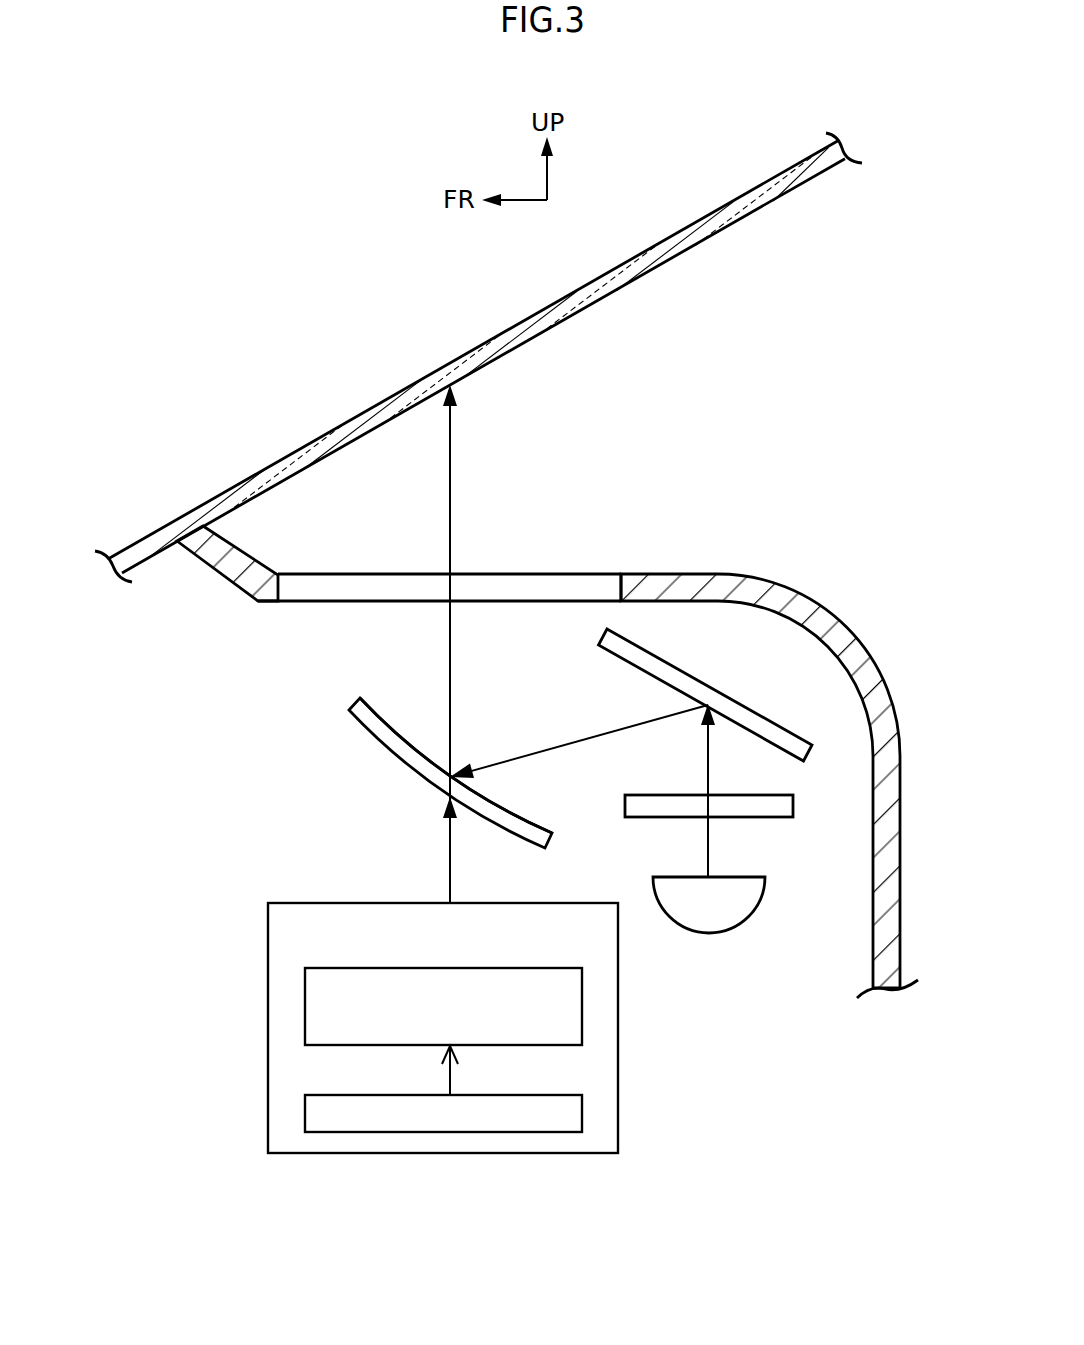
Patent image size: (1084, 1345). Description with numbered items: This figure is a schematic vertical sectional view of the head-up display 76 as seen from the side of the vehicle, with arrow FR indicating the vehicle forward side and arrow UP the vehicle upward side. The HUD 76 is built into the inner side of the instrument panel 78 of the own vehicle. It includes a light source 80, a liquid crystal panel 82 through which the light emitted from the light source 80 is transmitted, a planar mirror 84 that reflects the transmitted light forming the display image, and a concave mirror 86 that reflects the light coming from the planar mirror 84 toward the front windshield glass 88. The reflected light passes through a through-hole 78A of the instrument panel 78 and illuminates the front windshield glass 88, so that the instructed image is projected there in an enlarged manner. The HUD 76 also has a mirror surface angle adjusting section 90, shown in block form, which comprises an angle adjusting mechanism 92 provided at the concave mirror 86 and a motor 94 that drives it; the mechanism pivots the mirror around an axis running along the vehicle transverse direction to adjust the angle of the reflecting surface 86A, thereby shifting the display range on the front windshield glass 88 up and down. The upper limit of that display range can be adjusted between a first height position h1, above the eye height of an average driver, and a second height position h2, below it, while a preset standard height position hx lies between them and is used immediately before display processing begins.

The head-up display (HUD) 76 is at (500, 1202).
The instrument panel 78 is at (768, 575).
The through-hole 78A is at (620, 590).
The light source 80 is at (720, 932).
The liquid crystal panel 82 is at (778, 818).
The planar mirror 84 is at (722, 693).
The concave mirror 86 is at (398, 762).
The reflecting surface 86A is at (384, 716).
The front windshield glass 88 is at (733, 222).
The mirror surface angle adjusting section 90 is at (583, 905).
The angle adjusting mechanism 92 is at (583, 985).
The motor 94 is at (583, 1112).
The first height position h1 is at (665, 261).
The second height position h2 is at (563, 319).
The standard height position hx is at (615, 289).